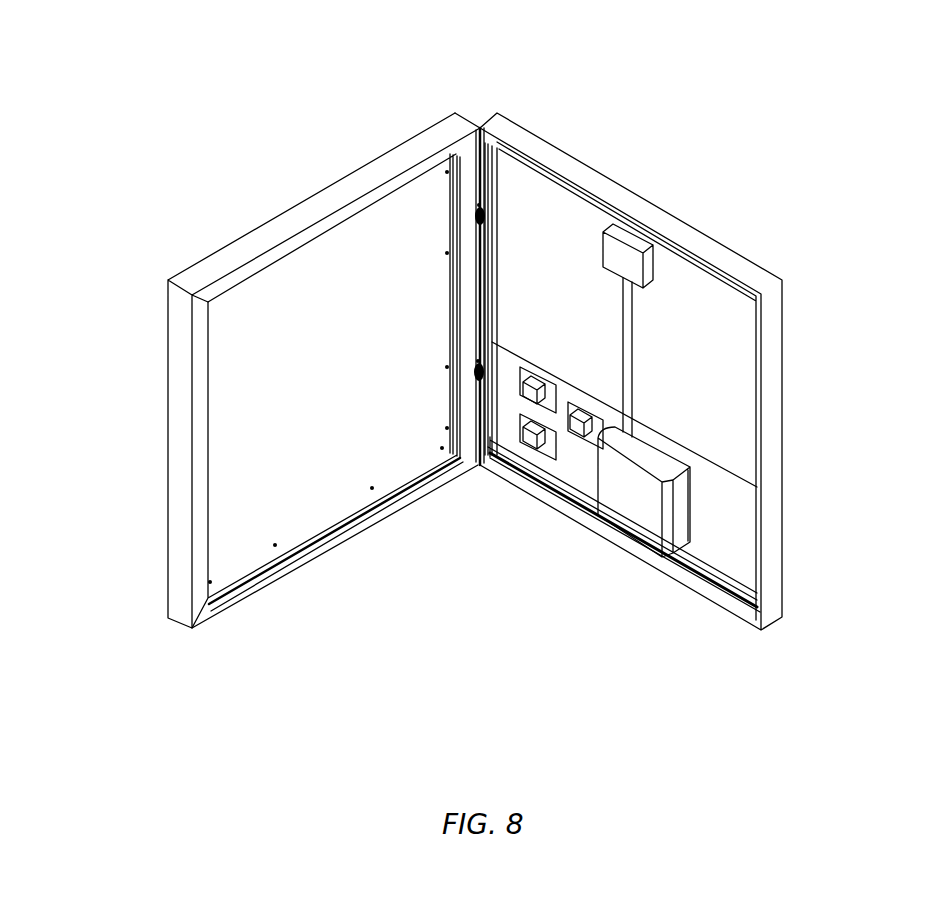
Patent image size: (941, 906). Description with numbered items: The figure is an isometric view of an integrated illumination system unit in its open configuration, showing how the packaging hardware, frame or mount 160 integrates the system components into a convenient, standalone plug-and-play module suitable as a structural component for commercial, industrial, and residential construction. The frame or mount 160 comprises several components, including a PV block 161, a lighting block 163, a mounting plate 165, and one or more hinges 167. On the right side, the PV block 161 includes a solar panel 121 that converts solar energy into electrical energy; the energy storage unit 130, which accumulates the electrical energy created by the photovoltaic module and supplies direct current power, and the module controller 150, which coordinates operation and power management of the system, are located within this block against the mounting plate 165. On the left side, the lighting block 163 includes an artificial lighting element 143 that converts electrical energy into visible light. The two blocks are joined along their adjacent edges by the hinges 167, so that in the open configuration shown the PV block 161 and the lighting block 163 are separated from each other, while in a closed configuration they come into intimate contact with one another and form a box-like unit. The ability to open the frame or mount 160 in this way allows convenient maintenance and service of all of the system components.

The frame or mount 160 is at (282, 112).
The PV block 161 is at (770, 360).
The lighting block 163 is at (178, 440).
The artificial lighting element 143 is at (323, 298).
The hinge 167 is at (477, 207).
The mounting plate 165 is at (505, 403).
The solar panel 121 is at (553, 227).
The energy storage unit 130 is at (633, 488).
The module controller 150 is at (535, 437).